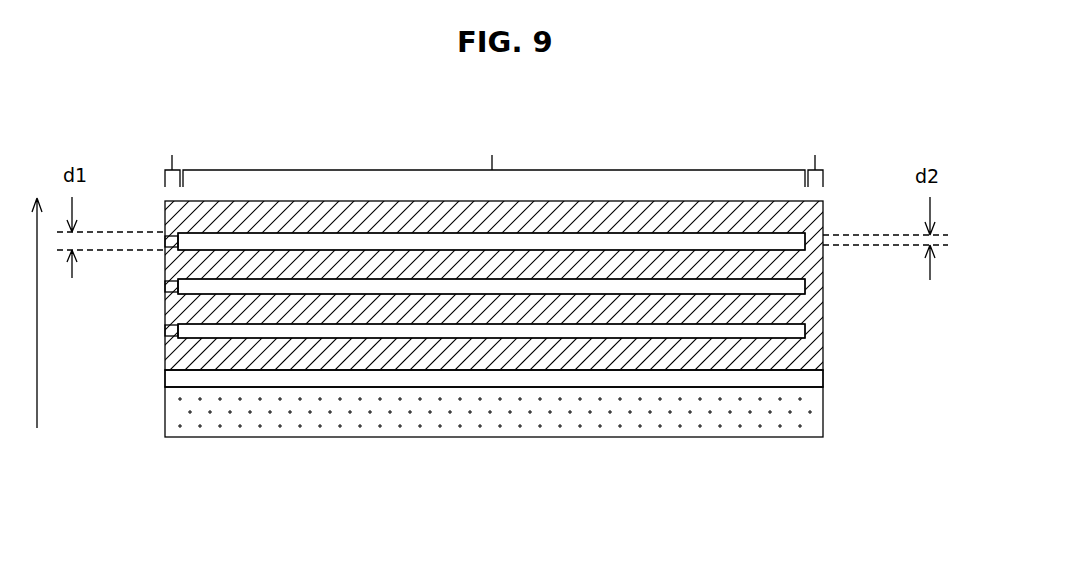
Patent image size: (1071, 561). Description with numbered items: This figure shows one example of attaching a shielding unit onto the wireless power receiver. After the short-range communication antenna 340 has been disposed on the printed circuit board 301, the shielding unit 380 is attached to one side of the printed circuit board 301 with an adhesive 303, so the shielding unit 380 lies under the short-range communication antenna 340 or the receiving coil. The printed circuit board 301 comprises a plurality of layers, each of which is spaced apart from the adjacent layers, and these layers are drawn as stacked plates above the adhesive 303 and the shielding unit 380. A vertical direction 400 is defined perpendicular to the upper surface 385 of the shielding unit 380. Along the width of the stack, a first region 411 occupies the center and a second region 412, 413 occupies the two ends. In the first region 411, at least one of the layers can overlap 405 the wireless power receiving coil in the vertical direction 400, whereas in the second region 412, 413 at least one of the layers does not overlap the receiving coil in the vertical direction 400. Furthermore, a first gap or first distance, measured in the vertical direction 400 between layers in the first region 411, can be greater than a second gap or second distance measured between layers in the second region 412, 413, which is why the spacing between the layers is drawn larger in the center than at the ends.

The printed circuit board 301 is at (823, 354).
The adhesive 303 is at (823, 378).
The short-range communication antenna 340 is at (165, 241).
The shielding unit 380 is at (823, 410).
The upper surface 385 is at (180, 382).
The vertical direction 400 is at (58, 313).
The overlap 405 is at (793, 343).
The first region 411 is at (494, 151).
The second region 412 is at (168, 151).
The second region 413 is at (819, 151).